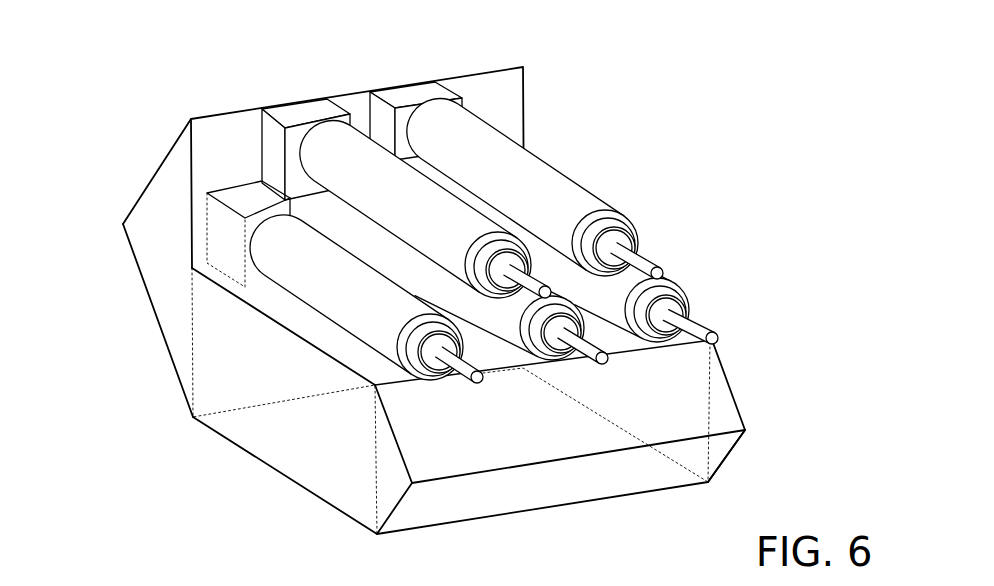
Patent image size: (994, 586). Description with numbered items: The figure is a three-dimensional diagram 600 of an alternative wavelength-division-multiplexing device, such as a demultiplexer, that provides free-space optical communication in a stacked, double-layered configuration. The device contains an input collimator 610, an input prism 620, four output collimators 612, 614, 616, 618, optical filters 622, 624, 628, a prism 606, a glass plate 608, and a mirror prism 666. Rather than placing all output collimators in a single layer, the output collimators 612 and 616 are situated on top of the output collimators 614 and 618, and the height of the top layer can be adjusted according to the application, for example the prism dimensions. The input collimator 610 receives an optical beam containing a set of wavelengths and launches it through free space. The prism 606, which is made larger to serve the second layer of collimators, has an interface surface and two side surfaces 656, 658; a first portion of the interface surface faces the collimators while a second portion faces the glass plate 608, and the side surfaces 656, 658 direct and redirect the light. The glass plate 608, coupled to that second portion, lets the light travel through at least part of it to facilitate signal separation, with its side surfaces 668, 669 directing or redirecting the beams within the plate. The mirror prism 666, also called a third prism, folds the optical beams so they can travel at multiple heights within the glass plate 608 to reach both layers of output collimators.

The 3D diagram 600 is at (473, 297).
The prism 606 is at (134, 268).
The glass plate 608 is at (295, 468).
The input collimator 610 is at (320, 308).
The output collimator 612 is at (394, 229).
The output collimator 614 is at (472, 329).
The output collimator 616 is at (519, 214).
The output collimator 618 is at (589, 307).
The input prism 620 is at (226, 190).
The optical filter 622 is at (301, 112).
The optical filter 624 is at (196, 272).
The optical filter 628 is at (401, 96).
The side surface 656 is at (143, 194).
The side surface 658 is at (140, 274).
The mirror prism 666 is at (593, 521).
The side surface 668 is at (728, 378).
The side surface 669 is at (731, 456).